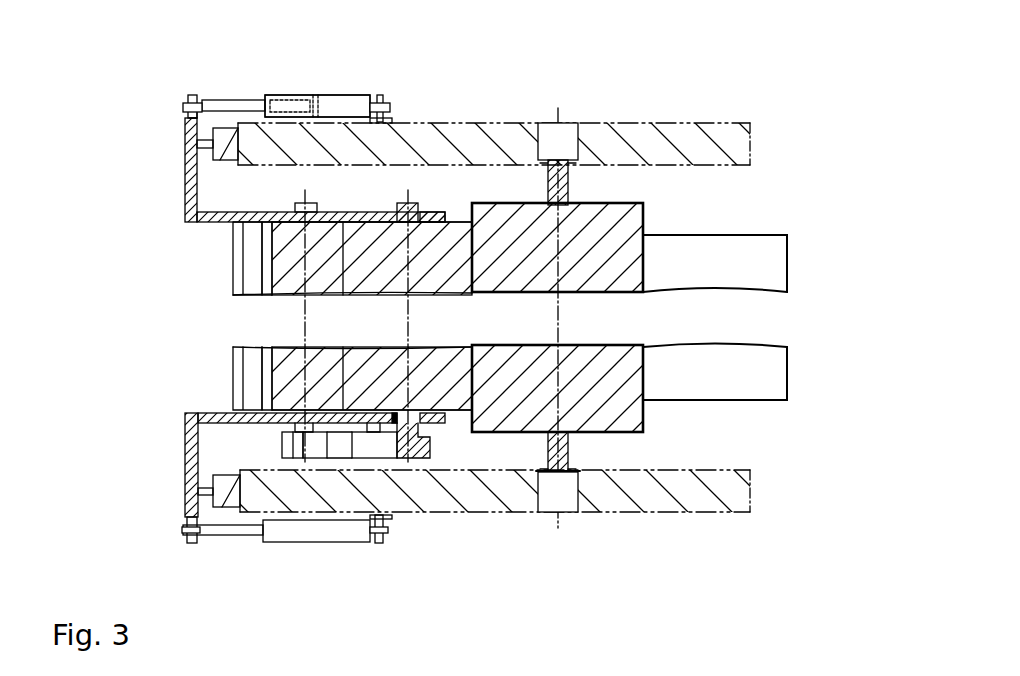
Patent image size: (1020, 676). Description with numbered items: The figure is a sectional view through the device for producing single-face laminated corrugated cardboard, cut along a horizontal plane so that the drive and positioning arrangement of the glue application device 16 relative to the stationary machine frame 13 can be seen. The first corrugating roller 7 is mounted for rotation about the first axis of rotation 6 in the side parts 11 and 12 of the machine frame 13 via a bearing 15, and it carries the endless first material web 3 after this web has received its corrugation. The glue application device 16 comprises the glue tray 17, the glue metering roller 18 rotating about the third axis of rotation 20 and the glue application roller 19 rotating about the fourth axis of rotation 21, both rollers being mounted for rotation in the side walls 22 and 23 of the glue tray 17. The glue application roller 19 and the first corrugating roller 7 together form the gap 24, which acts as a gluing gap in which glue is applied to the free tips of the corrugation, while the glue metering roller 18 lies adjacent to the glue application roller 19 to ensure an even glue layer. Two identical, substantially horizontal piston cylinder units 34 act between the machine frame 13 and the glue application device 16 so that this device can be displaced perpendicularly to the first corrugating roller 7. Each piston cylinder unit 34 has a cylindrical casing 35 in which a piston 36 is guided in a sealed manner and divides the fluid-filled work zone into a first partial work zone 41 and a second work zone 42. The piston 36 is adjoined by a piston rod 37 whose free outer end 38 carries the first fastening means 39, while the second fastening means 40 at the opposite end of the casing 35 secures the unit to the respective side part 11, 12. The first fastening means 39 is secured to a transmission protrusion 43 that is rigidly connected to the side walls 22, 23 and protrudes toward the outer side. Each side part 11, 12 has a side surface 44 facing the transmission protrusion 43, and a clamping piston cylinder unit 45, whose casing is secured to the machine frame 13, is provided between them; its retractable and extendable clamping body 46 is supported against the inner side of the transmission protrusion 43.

The endless first material web 3 is at (695, 387).
The first axis of rotation 6 is at (547, 518).
The first corrugating roller 7 is at (585, 425).
The side part 11 is at (722, 125).
The side part 12 is at (650, 510).
The machine frame 13 is at (670, 123).
The bearing 15 is at (538, 478).
The glue application device 16 is at (248, 363).
The glue tray 17 is at (247, 267).
The glue metering roller 18 is at (280, 390).
The glue application roller 19 is at (280, 285).
The third axis of rotation 20 is at (305, 315).
The fourth axis of rotation 21 is at (408, 197).
The side wall 22 is at (253, 422).
The side wall 23 is at (260, 200).
The gap 24 is at (472, 432).
The piston cylinder unit 34 is at (277, 92).
The cylindrical casing 35 is at (353, 95).
The piston 36 is at (307, 97).
The piston rod 37 is at (185, 105).
The free outer end 38 is at (183, 107).
The first fastening means 39 is at (185, 112).
The second fastening means 40 is at (381, 95).
The first partial work zone 41 is at (227, 103).
The second work zone 42 is at (325, 97).
The transmission protrusion 43 is at (192, 142).
The side surface 44 is at (233, 160).
The clamping piston cylinder unit 45 is at (220, 467).
The clamping body 46 is at (197, 490).